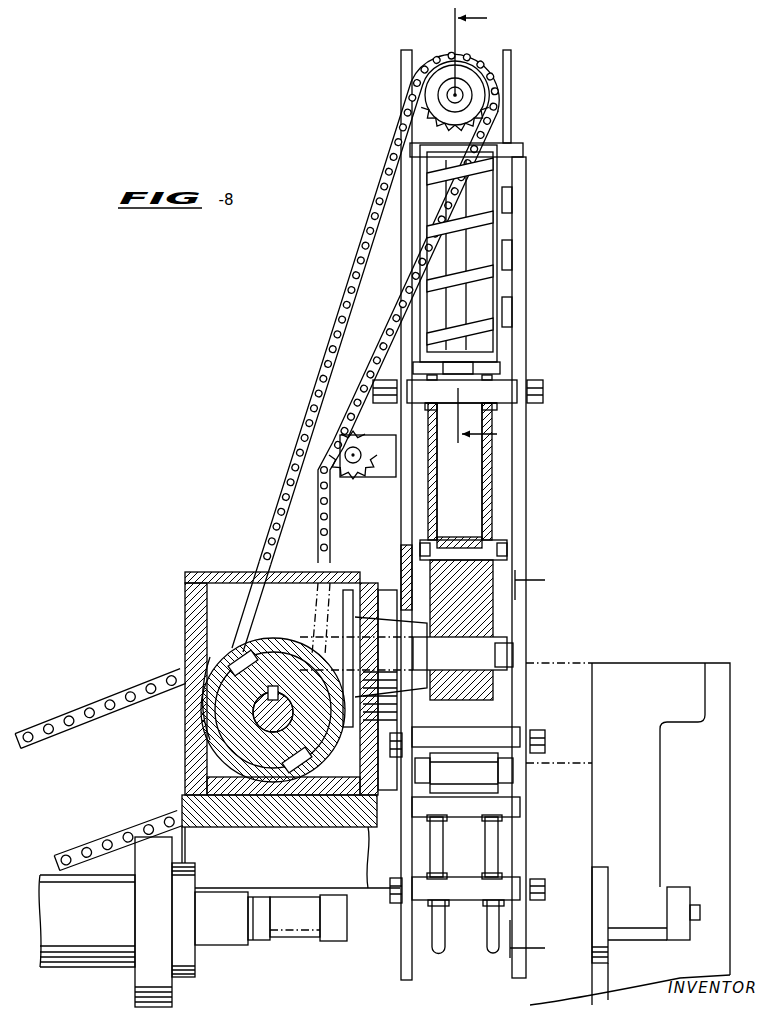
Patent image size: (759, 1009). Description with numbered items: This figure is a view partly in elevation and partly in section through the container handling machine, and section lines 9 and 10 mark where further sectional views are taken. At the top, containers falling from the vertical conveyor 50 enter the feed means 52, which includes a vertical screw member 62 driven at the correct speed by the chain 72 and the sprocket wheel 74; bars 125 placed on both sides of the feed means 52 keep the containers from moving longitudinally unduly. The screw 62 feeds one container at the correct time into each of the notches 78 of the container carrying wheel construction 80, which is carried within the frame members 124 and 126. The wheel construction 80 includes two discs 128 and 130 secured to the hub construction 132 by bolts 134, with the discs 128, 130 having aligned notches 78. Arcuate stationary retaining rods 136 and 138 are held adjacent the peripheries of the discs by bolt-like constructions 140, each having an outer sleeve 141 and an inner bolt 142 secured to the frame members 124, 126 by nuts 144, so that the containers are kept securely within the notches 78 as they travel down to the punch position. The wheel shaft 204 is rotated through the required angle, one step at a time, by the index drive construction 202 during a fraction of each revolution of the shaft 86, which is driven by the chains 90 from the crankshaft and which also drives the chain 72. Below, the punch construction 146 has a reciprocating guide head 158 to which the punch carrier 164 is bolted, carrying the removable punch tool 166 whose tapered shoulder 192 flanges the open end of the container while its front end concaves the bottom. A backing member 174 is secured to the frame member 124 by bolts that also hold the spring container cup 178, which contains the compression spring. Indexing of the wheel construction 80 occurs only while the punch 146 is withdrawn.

The section line 9 is at (468, 226).
The section line 10 is at (536, 764).
The vertical conveyor 50 is at (400, 73).
The feed means 52 is at (560, 274).
The vertical screw member 62 is at (465, 256).
The chain 72 is at (345, 270).
The sprocket wheel 74 is at (478, 98).
The notches 78 is at (492, 413).
The container carrying wheel construction 80 is at (491, 481).
The shaft 86 is at (238, 748).
The chains 90 is at (86, 706).
The frame member 124 is at (526, 446).
The bars 125 is at (513, 210).
The frame member 126 is at (400, 522).
The disc 128 is at (492, 473).
The disc 130 is at (438, 508).
The hub construction 132 is at (482, 614).
The bolts 134 is at (482, 552).
The arcuate stationary rod 136 is at (497, 852).
The arcuate stationary rod 138 is at (442, 853).
The bolt-like constructions 140 is at (465, 912).
The outer sleeves 141 is at (500, 386).
The inner bolts 142 is at (546, 388).
The nuts 144 is at (546, 400).
The punch construction 146 is at (293, 918).
The reciprocating guide head 158 is at (150, 967).
The punch carrier 164 is at (228, 937).
The removable punch tool 166 is at (311, 928).
The backing member 174 is at (540, 985).
The spring container cup 178 is at (670, 900).
The tapered shoulder 192 is at (266, 942).
The index drive construction 202 is at (220, 600).
The wheel shaft 204 is at (482, 654).